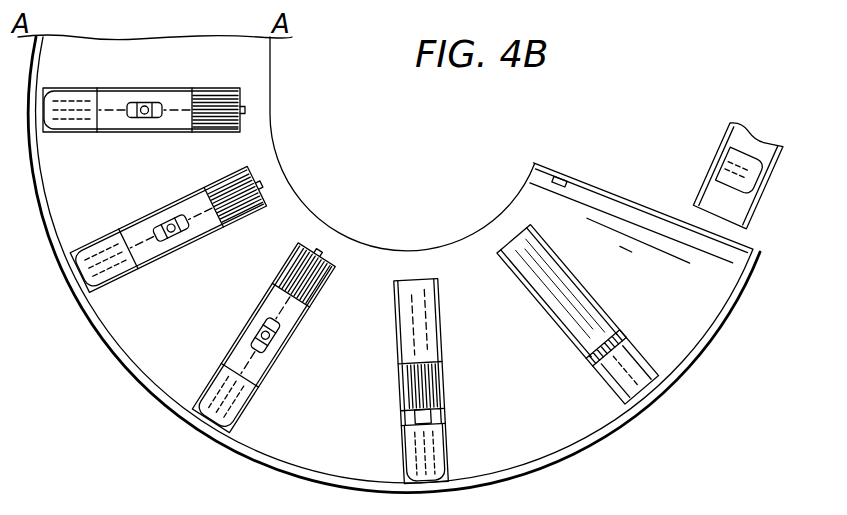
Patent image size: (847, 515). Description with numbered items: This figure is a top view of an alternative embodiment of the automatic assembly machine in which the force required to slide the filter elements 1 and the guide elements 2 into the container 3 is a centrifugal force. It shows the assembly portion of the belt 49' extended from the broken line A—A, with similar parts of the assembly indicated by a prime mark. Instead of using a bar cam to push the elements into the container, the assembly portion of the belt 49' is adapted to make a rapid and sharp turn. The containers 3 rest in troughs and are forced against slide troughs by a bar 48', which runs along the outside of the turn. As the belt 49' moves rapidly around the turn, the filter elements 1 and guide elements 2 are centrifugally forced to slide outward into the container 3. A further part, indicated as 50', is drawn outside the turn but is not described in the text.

The filter element 1 is at (216, 101).
The guide element 2 is at (158, 106).
The container 3 is at (82, 128).
The belt 49' is at (402, 146).
The bar 48' is at (394, 270).
The cartridge being inserted 50' is at (756, 187).